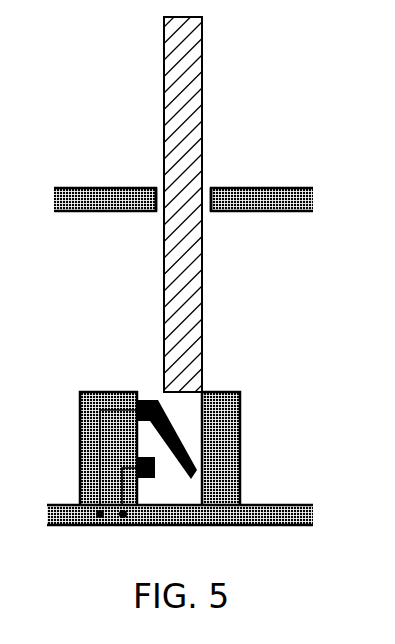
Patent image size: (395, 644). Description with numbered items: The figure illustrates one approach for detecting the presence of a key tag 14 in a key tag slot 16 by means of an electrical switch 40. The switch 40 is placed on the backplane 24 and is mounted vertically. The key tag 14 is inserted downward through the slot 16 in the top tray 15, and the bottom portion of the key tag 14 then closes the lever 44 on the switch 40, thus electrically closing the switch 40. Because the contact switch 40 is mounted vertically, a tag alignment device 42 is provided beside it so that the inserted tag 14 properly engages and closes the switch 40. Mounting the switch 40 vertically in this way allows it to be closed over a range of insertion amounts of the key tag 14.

The key tag 14 is at (203, 96).
The top tray 15 is at (272, 188).
The key tag slot 16 is at (207, 190).
The electrical switch 40 is at (80, 407).
The tag alignment device 42 is at (240, 430).
The lever 44 is at (170, 450).
The backplane 24 is at (258, 505).